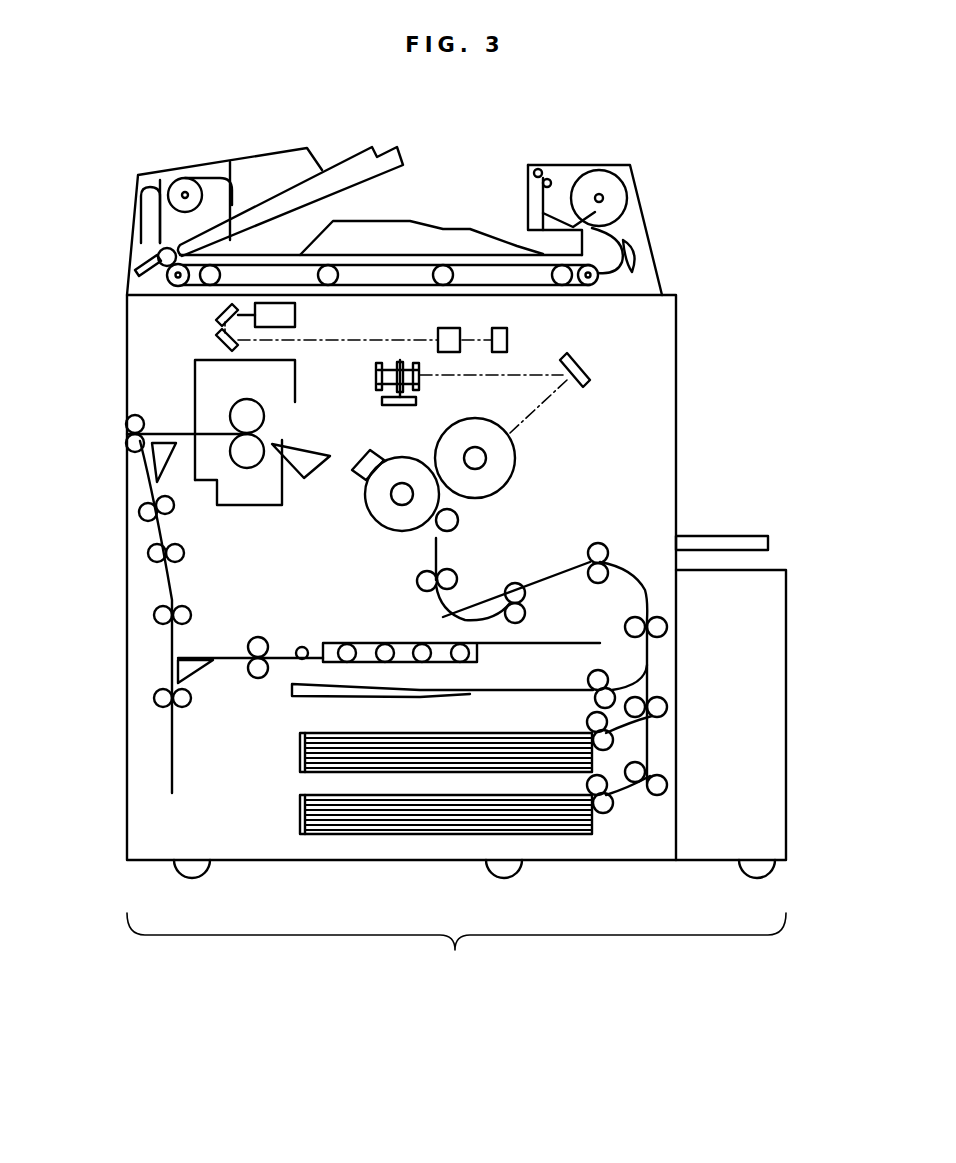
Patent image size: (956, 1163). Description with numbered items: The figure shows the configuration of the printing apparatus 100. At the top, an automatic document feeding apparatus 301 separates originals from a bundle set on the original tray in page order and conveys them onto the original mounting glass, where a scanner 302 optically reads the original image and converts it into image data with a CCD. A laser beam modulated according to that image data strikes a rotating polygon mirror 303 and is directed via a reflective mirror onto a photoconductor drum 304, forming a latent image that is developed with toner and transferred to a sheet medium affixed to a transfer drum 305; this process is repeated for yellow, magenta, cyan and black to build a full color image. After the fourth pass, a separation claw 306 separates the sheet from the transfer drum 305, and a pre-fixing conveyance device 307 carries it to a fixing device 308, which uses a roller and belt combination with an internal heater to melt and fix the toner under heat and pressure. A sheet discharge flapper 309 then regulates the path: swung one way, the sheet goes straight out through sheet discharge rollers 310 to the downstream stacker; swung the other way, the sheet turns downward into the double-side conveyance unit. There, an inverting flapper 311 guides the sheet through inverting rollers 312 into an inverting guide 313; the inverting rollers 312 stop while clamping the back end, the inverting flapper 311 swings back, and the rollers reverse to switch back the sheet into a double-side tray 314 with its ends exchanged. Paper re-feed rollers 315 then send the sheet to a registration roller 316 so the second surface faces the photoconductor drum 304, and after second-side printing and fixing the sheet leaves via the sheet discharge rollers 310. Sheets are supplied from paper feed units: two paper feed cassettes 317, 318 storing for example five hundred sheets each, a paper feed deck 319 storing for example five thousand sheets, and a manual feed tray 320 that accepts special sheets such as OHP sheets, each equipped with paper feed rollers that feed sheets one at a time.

The printing apparatus 100 is at (456, 563).
The automatic document feeding apparatus 301 is at (277, 147).
The scanner 302 is at (297, 316).
The rotating polygon mirror 303 is at (416, 400).
The photoconductor drum 304 is at (516, 462).
The transfer drum 305 is at (452, 508).
The separation claw 306 is at (353, 478).
The pre-fixing conveyance device 307 is at (292, 480).
The fixing device 308 is at (296, 378).
The sheet discharge flapper 309 is at (166, 441).
The sheet discharge rollers 310 is at (133, 414).
The inverting flapper 311 is at (190, 660).
The inverting rollers 312 is at (155, 613).
The inverting guide 313 is at (170, 780).
The double-side tray 314 is at (388, 694).
The paper re-feed rollers 315 is at (588, 679).
The registration roller 316 is at (426, 583).
The paper feed cassette 317 is at (300, 745).
The paper feed cassette 318 is at (300, 807).
The paper feed deck 319 is at (787, 590).
The manual feed tray 320 is at (722, 535).